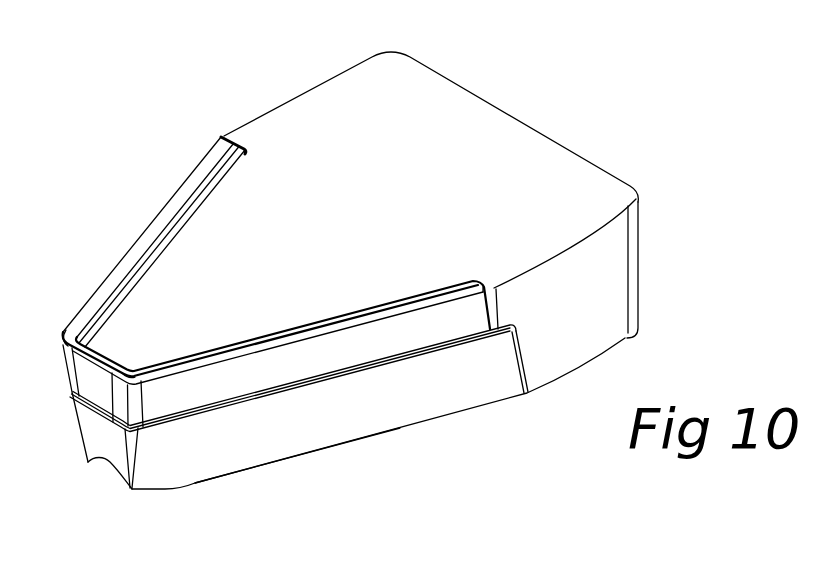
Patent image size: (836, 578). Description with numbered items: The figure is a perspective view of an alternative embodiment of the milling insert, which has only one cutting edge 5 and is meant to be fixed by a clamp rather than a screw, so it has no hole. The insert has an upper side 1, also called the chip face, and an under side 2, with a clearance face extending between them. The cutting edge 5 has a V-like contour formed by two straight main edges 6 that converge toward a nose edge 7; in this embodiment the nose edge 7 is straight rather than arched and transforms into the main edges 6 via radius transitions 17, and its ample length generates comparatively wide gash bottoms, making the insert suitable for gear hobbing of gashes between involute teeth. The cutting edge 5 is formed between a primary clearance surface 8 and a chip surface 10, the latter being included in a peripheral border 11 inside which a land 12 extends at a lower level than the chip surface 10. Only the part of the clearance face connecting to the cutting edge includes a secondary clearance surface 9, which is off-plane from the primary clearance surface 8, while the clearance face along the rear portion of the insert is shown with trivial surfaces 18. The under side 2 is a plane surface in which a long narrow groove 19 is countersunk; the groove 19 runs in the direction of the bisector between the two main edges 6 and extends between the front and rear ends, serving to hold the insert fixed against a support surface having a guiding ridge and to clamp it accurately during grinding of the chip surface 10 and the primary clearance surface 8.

The upper side 1 is at (222, 92).
The under side 2 is at (292, 484).
The cutting edge 5 is at (128, 220).
The main edges 6 is at (115, 267).
The nose edge 7 is at (88, 363).
The primary clearance surface 8 is at (278, 372).
The secondary clearance surface 9 is at (318, 431).
The chip surface 10 is at (260, 345).
The peripheral border 11 is at (181, 224).
The land 12 is at (390, 201).
The radius transitions 17 is at (62, 338).
The trivial surfaces 18 is at (561, 309).
The groove 19 is at (110, 474).